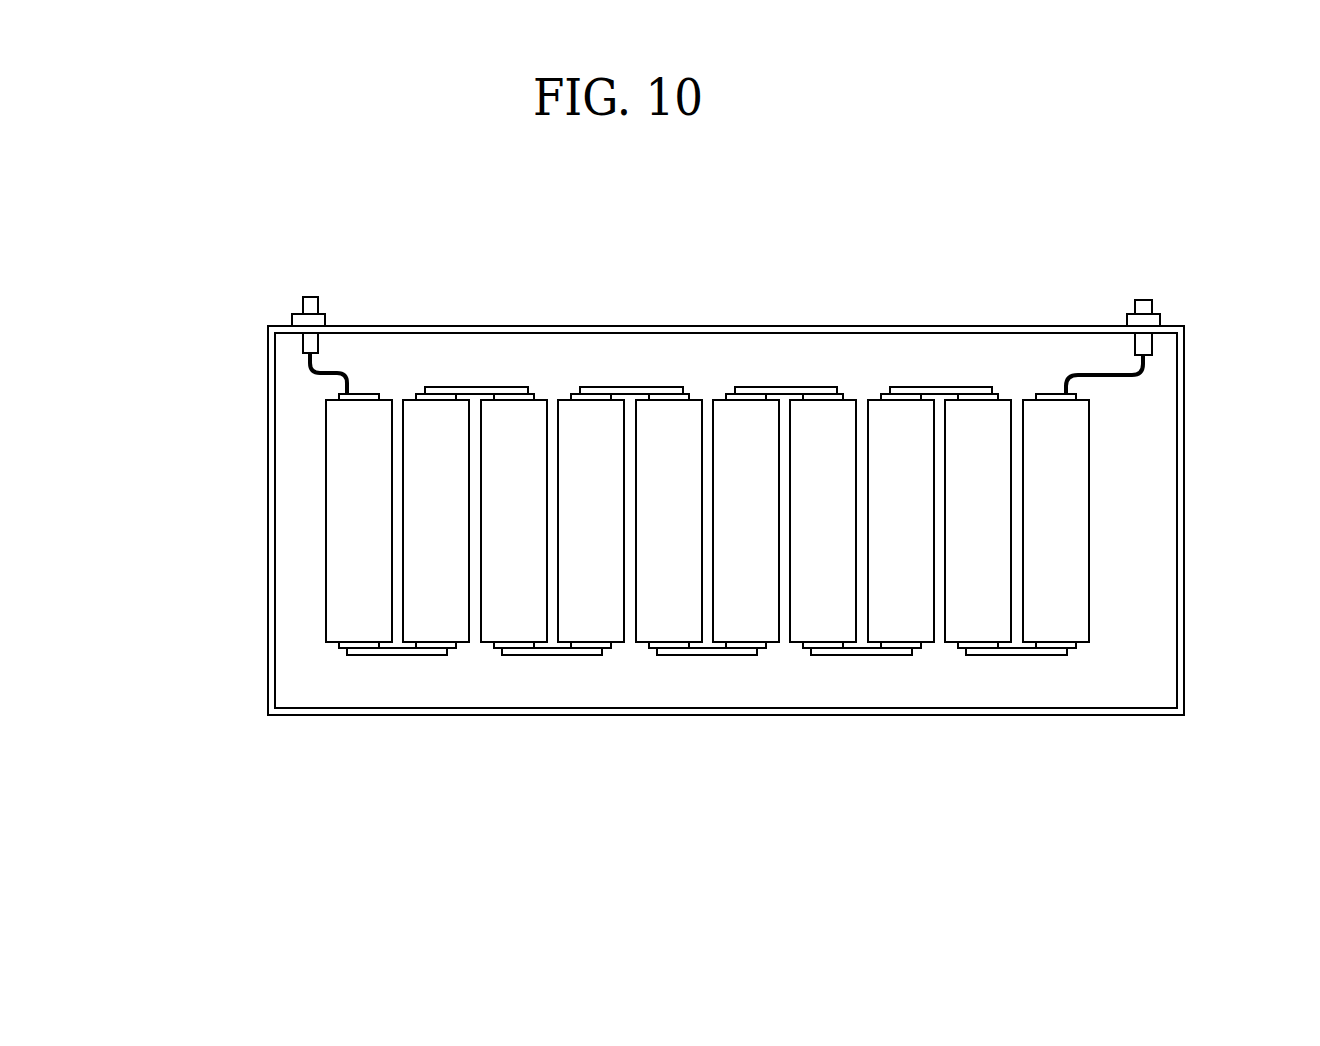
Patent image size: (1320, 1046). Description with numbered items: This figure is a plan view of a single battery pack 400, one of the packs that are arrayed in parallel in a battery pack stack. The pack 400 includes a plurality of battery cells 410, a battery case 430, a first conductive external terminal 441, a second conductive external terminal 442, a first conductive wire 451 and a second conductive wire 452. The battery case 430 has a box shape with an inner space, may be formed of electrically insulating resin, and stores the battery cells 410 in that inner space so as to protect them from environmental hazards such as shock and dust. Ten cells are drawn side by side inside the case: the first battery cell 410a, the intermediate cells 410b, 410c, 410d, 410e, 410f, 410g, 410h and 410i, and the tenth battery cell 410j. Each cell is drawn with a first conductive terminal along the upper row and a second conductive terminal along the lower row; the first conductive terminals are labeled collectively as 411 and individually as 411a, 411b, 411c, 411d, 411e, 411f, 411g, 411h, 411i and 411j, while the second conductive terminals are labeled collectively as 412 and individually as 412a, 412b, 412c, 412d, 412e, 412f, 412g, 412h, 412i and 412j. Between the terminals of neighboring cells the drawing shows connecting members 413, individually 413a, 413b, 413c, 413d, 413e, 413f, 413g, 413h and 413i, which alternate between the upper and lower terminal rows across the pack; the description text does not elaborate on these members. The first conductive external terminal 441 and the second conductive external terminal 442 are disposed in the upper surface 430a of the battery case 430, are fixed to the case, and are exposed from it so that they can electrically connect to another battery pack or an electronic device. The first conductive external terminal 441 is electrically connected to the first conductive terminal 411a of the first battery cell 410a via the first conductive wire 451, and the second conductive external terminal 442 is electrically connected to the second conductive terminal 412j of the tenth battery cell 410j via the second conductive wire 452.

The battery pack 400 is at (190, 233).
The battery cells 410 is at (322, 480).
The first battery cell 410a is at (359, 521).
The battery cell 410b is at (436, 521).
The battery cell 410c is at (514, 521).
The battery cell 410d is at (591, 521).
The battery cell 410e is at (669, 521).
The battery cell 410f is at (746, 521).
The battery cell 410g is at (823, 521).
The battery cell 410h is at (901, 521).
The battery cell 410i is at (978, 521).
The tenth battery cell 410j is at (1056, 521).
The first electrode terminals 411 is at (331, 392).
The first conductive terminal 411a is at (372, 393).
The first electrode terminal 411b is at (453, 648).
The first electrode terminal 411c is at (533, 393).
The first electrode terminal 411d is at (608, 648).
The first electrode terminal 411e is at (685, 393).
The first electrode terminal 411f is at (760, 648).
The first electrode terminal 411g is at (840, 393).
The first electrode terminal 411h is at (918, 648).
The first electrode terminal 411i is at (996, 393).
The first electrode terminal 411j is at (1072, 648).
The second electrode terminals 412 is at (330, 648).
The second electrode terminal 412a is at (342, 652).
The second electrode terminal 412b is at (418, 393).
The second electrode terminal 412c is at (494, 648).
The second electrode terminal 412d is at (586, 393).
The second electrode terminal 412e is at (652, 648).
The second electrode terminal 412f is at (737, 393).
The second electrode terminal 412g is at (807, 648).
The second electrode terminal 412h is at (890, 393).
The second electrode terminal 412i is at (962, 648).
The second conductive terminal 412j is at (1045, 393).
The bus bars 413 is at (436, 240).
The bus bar 413a is at (395, 655).
The bus bar 413b is at (475, 387).
The bus bar 413c is at (550, 655).
The bus bar 413d is at (627, 387).
The bus bar 413e is at (705, 655).
The bus bar 413f is at (784, 387).
The bus bar 413g is at (860, 655).
The bus bar 413h is at (937, 387).
The bus bar 413i is at (1015, 655).
The battery case 430 is at (272, 326).
The upper surface of the battery case 430a is at (1105, 328).
The first conductive external terminal 441 is at (303, 297).
The second conductive external terminal 442 is at (1158, 320).
The first conductive wire 451 is at (310, 373).
The second conductive wire 452 is at (1113, 380).